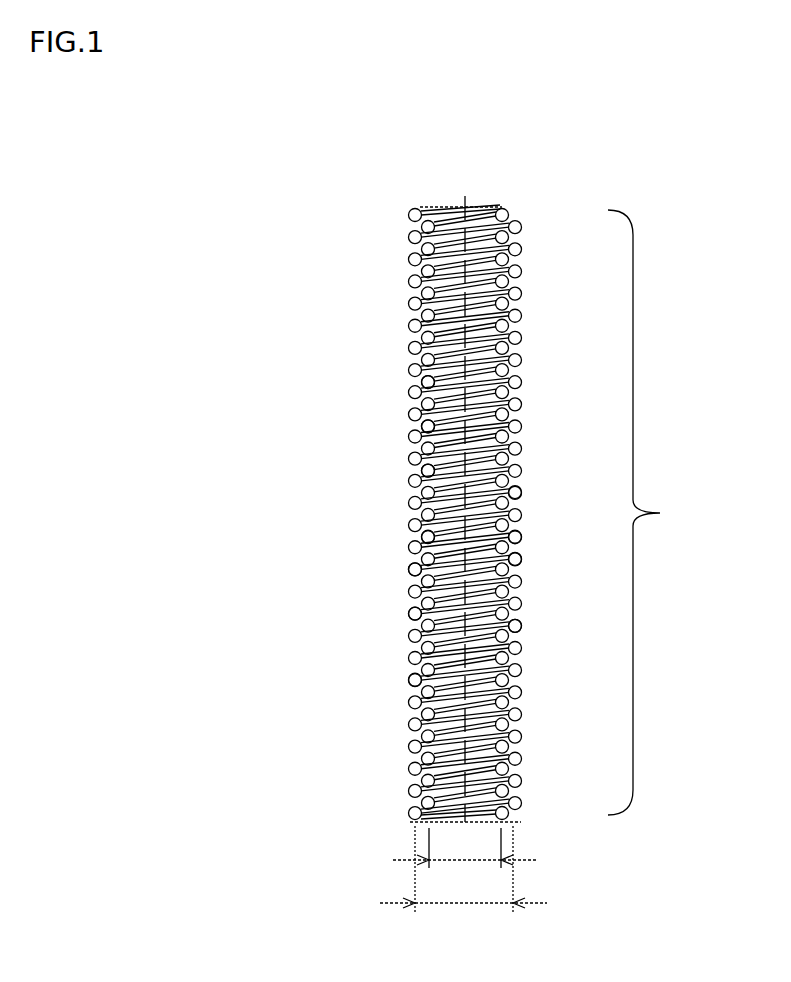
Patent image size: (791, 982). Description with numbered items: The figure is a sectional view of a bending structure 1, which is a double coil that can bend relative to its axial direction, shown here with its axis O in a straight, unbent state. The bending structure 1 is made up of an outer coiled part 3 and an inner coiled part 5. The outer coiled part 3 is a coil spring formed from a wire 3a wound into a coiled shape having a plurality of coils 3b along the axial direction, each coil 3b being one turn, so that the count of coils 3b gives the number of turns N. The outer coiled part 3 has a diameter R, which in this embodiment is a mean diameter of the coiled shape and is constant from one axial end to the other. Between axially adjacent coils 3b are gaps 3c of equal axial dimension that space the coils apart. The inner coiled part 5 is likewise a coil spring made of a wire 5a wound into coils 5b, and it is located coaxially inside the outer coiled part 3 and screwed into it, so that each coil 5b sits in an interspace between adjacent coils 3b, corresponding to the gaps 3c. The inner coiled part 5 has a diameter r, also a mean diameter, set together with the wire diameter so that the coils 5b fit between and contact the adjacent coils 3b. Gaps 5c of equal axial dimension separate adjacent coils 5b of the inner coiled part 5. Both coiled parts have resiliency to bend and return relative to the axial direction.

The bending structure 1 is at (575, 179).
The outer coiled part 3 is at (523, 283).
The wire 3a is at (521, 623).
The coil 3b is at (521, 484).
The gap 3c is at (521, 533).
The inner coiled part 5 is at (506, 356).
The wire 5a is at (428, 476).
The coil 5b is at (428, 426).
The gap 5c is at (428, 382).
The axis O is at (465, 212).
The number of turns N is at (649, 512).
The diameter of the outer coiled part R is at (463, 885).
The diameter of the inner coiled part r is at (465, 862).